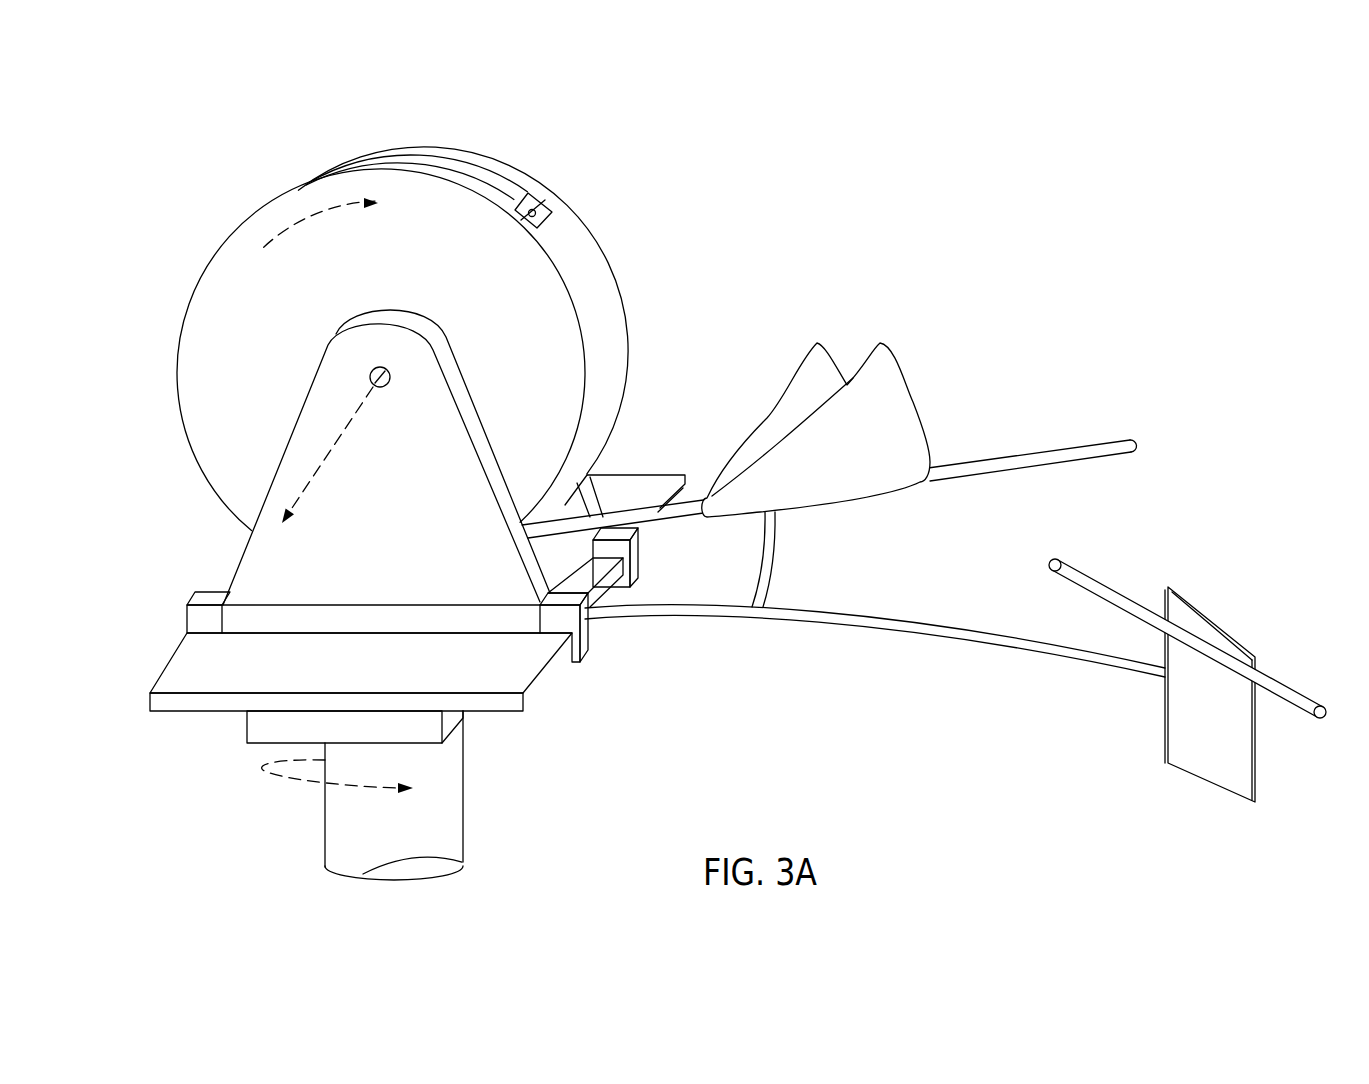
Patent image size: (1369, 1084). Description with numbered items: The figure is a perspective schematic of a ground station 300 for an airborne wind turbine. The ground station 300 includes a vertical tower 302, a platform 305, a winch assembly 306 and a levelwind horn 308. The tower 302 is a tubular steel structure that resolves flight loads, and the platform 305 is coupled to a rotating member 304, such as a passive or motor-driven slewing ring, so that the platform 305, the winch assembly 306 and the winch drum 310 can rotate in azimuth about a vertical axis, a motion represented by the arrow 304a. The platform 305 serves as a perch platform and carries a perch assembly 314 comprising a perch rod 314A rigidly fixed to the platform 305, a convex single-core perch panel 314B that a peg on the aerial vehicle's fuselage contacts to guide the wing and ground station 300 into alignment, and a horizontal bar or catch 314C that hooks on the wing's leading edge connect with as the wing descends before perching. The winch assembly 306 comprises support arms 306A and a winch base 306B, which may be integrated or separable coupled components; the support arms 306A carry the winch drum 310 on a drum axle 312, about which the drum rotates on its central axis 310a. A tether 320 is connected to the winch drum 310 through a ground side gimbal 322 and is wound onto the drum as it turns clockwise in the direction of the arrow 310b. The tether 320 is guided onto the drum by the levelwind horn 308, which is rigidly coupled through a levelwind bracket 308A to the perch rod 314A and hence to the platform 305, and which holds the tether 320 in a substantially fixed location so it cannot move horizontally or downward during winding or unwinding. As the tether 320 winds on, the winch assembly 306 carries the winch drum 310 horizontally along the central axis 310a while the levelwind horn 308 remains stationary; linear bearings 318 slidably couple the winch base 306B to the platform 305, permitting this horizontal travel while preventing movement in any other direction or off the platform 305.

The ground station 300 is at (824, 177).
The vertical tower 302 is at (440, 807).
The rotating member 304 is at (247, 731).
The arrow 304a is at (297, 780).
The platform 305 is at (150, 697).
The winch assembly 306 is at (156, 357).
The support arms 306A is at (267, 570).
The winch base 306B is at (315, 617).
The levelwind horn 308 is at (777, 422).
The levelwind bracket 308A is at (777, 550).
The winch drum 310 is at (578, 253).
The drum central axis 310a is at (325, 462).
The arrow 310b is at (320, 214).
The drum axle 312 is at (385, 388).
The perch assembly 314 is at (983, 694).
The perch rod 314A is at (930, 640).
The perch panel 314B is at (1193, 773).
The horizontal bar 314C is at (1070, 567).
The linear bearings 318 is at (185, 625).
The tether 320 is at (330, 170).
The ground side gimbal 322 is at (543, 200).